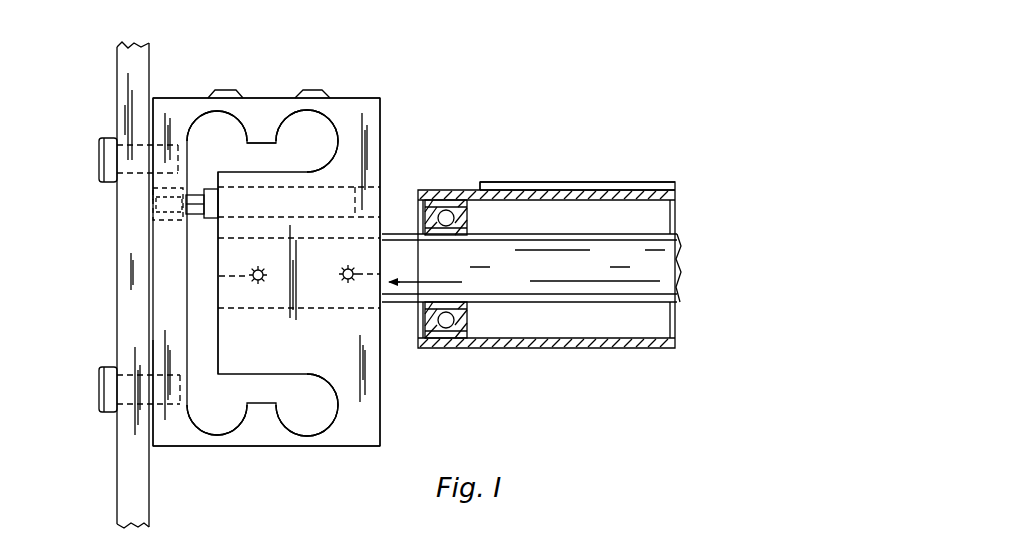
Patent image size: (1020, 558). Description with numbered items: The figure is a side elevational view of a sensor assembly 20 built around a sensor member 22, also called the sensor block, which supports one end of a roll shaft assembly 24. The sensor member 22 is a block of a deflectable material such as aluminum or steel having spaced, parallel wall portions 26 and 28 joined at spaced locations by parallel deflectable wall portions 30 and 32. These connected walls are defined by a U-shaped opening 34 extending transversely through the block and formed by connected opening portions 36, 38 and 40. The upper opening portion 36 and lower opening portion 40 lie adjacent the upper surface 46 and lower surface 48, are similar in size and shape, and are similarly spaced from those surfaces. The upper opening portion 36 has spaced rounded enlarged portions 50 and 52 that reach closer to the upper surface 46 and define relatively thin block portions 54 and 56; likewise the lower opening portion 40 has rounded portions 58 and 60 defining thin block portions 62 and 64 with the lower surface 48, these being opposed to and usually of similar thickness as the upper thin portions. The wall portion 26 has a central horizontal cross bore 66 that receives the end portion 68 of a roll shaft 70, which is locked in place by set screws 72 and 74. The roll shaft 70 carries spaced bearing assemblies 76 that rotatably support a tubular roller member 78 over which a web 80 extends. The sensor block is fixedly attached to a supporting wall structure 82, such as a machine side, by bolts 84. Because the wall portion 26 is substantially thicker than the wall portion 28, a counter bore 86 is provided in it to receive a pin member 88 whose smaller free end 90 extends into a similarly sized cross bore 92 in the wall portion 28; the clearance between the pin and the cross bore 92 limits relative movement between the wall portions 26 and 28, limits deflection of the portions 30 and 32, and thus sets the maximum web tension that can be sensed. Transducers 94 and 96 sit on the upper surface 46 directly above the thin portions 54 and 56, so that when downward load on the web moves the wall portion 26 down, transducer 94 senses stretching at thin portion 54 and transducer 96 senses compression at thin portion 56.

The sensor assembly 20 is at (527, 66).
The sensor member 22 is at (362, 93).
The roll shaft assembly 24 is at (643, 174).
The wall portion 26 is at (384, 383).
The wall portion 28 is at (163, 323).
The deflectable wall portion 30 is at (282, 110).
The deflectable wall portion 32 is at (262, 424).
The U-shaped opening 34 is at (183, 242).
The upper opening portion 36 is at (261, 152).
The opening portion 38 is at (200, 310).
The lower opening portion 40 is at (262, 387).
The upper surface 46 is at (168, 97).
The lower surface 48 is at (185, 447).
The enlarged opening portion 50 is at (204, 110).
The enlarged opening portion 52 is at (306, 113).
The thin block portion 54 is at (221, 108).
The thin block portion 56 is at (310, 106).
The enlarged opening portion 58 is at (216, 433).
The enlarged opening portion 60 is at (306, 434).
The thin block portion 62 is at (217, 438).
The thin block portion 64 is at (309, 435).
The cross bore 66 is at (350, 308).
The end portion 68 is at (215, 276).
The roll shaft 70 is at (399, 253).
The set screw 72 is at (257, 285).
The set screw 74 is at (358, 270).
The bearing assembly 76 is at (484, 222).
The tubular roller member 78 is at (462, 192).
The web 80 is at (563, 181).
The supporting wall structure 82 is at (132, 443).
The bolt 84 is at (97, 157).
The counter bore 86 is at (386, 161).
The pin member 88 is at (304, 198).
The free end 90 is at (150, 214).
The cross bore 92 is at (153, 200).
The transducer 94 is at (223, 89).
The transducer 96 is at (317, 89).